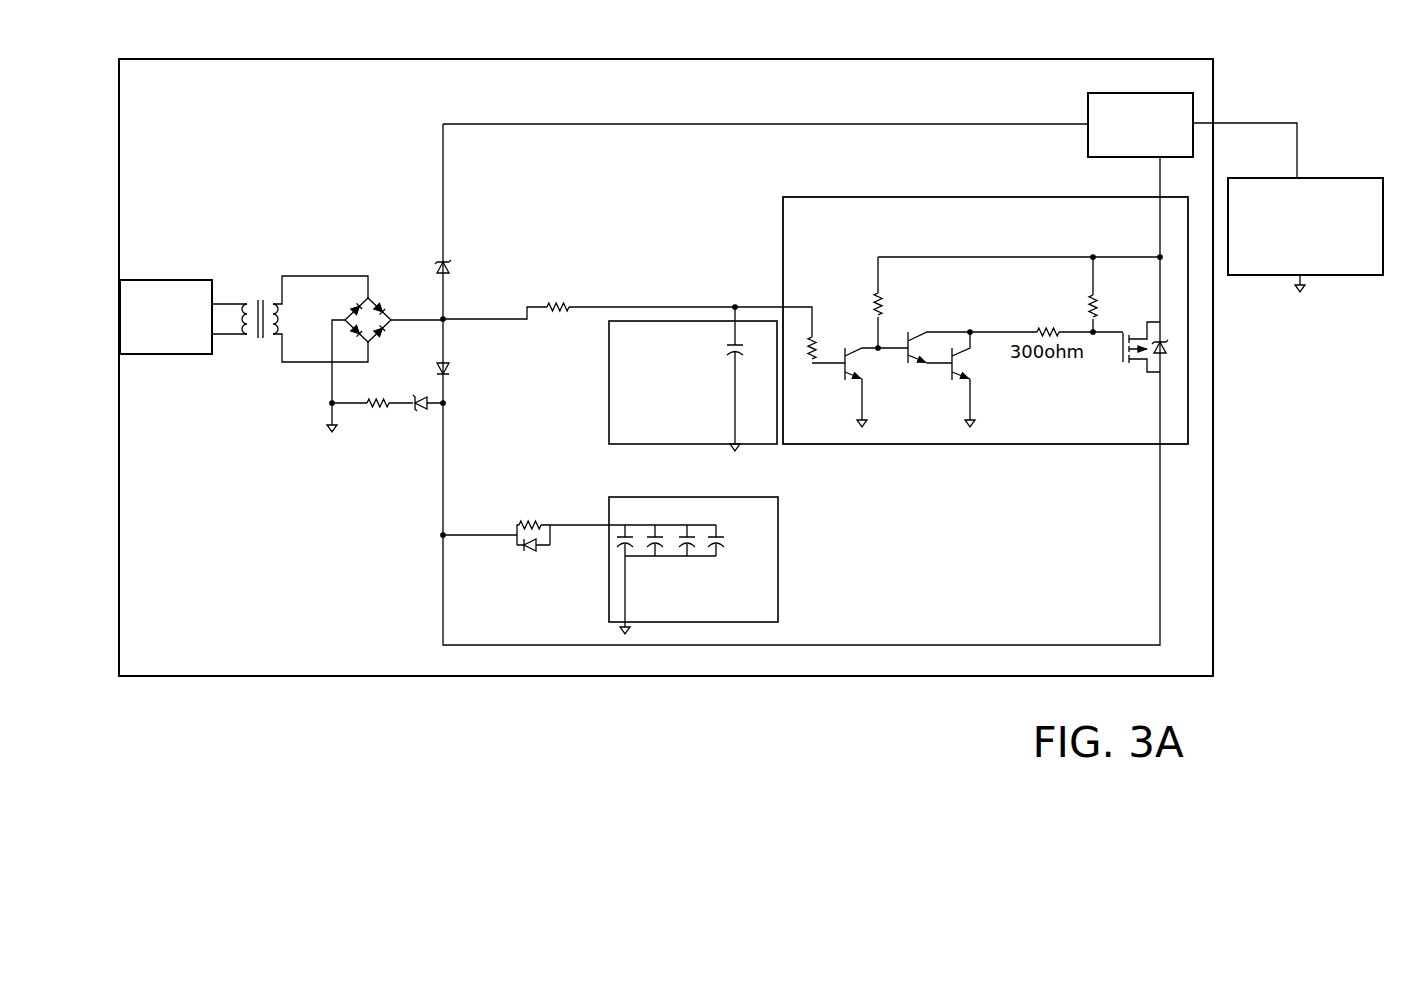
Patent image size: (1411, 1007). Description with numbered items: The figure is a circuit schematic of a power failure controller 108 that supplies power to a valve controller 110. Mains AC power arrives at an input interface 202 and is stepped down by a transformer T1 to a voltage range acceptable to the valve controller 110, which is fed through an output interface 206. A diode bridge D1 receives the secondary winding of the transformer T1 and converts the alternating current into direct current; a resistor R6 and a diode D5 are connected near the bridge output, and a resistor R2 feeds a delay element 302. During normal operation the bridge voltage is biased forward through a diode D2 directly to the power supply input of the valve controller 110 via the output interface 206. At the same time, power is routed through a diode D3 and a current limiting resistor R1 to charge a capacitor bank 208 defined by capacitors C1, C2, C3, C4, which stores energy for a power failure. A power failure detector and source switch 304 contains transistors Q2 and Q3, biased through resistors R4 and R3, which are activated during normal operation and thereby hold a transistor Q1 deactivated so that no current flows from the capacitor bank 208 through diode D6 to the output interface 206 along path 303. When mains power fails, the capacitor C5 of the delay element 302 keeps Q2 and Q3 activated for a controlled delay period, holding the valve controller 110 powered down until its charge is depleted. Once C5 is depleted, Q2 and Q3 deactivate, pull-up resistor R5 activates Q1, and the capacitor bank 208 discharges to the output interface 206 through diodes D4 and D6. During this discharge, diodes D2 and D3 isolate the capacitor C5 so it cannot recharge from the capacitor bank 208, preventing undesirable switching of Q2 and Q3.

The power failure controller 108 is at (810, 697).
The path 303 is at (1035, 645).
The input interface 202 is at (170, 280).
The transformer T1 is at (265, 298).
The diode bridge D1 is at (377, 284).
The resistor R6 is at (373, 428).
The diode D5 is at (420, 427).
The diode D2 is at (462, 270).
The diode D3 is at (462, 370).
The resistor R2 is at (558, 297).
The delay element 302 is at (609, 402).
The capacitor C5 is at (742, 334).
The power failure detector and source switch 304 is at (808, 197).
The resistor R4 is at (802, 328).
The resistor R3 is at (868, 305).
The transistor Q2 is at (846, 395).
The transistor Q3 is at (916, 372).
The pull-up resistor R5 is at (1048, 328).
The transistor Q1 is at (1114, 355).
The diode D6 is at (1178, 347).
The output interface 206 is at (1088, 101).
The valve controller 110 is at (1327, 178).
The current limiting resistor R1 is at (534, 512).
The diode D4 is at (534, 564).
The capacitor bank 208 is at (724, 552).
The capacitor C1 is at (625, 521).
The capacitor C2 is at (655, 521).
The capacitor C3 is at (687, 521).
The capacitor C4 is at (716, 521).